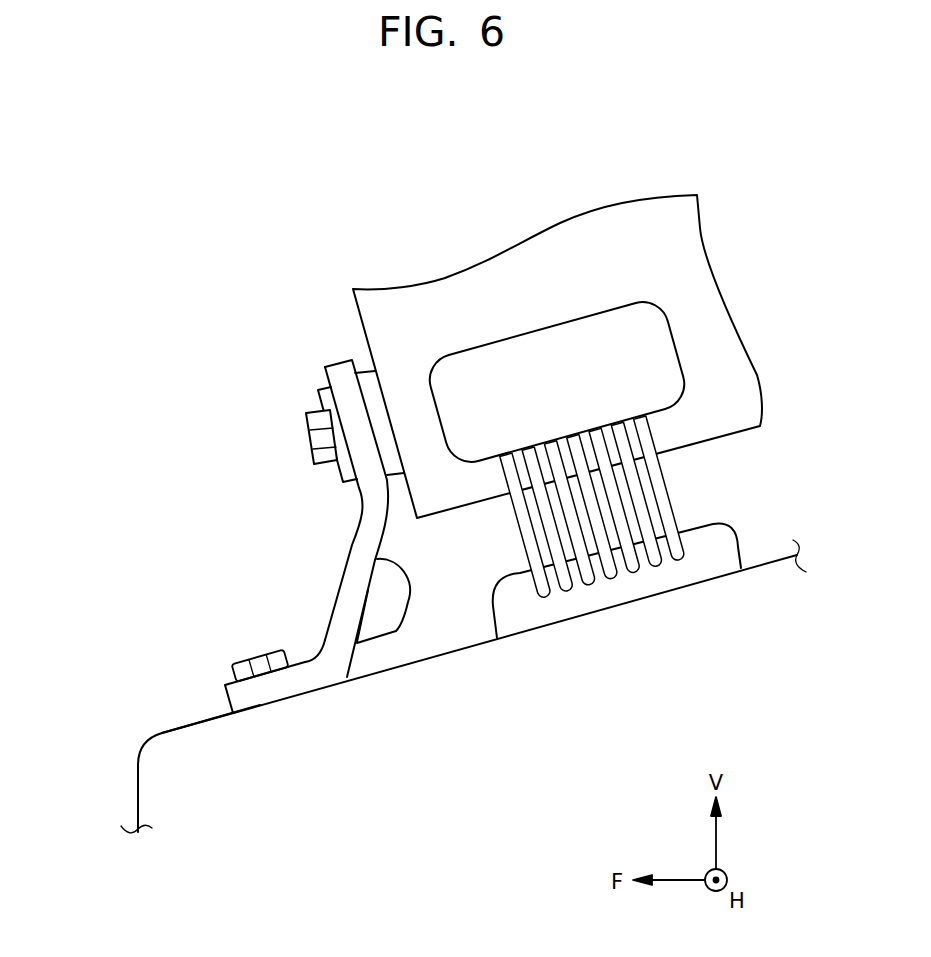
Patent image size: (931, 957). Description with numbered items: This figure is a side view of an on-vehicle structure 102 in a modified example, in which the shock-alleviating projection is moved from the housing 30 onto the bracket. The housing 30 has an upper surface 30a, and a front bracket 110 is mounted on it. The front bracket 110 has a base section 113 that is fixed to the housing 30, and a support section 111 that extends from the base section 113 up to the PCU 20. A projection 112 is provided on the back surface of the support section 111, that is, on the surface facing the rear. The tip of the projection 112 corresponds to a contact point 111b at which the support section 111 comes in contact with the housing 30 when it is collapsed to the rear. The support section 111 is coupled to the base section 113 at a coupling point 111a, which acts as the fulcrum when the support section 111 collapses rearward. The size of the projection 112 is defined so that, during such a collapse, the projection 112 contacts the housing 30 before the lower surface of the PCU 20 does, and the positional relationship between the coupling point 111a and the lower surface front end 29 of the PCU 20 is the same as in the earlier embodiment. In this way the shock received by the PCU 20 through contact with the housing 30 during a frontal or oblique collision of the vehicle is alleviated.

The on-vehicle structure 102 is at (243, 236).
The PCU 20 is at (524, 253).
The lower surface front end 29 is at (421, 531).
The front bracket 110 is at (337, 357).
The support section 111 is at (354, 563).
The coupling point 111a is at (351, 688).
The contact point 111b is at (401, 630).
The projection 112 is at (377, 608).
The base section 113 is at (240, 698).
The housing 30 is at (150, 798).
The upper surface of the housing 30a is at (167, 724).